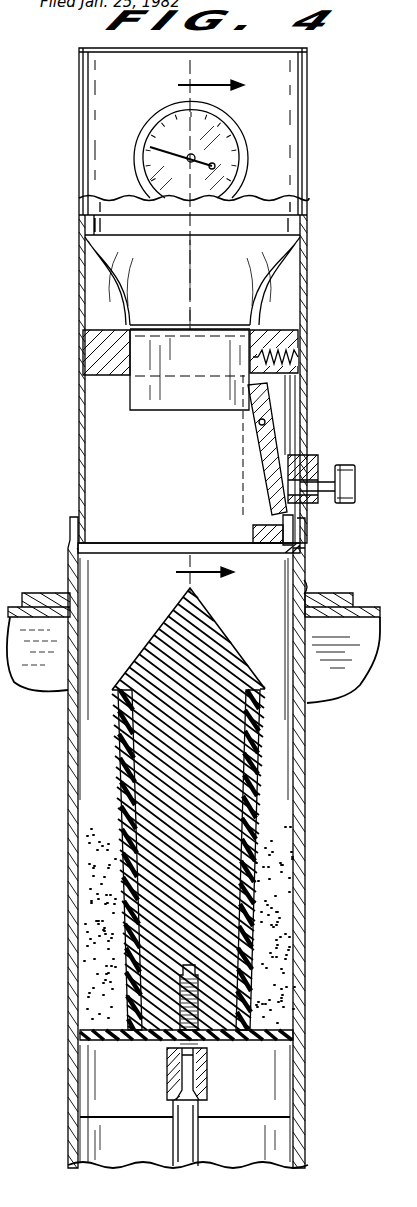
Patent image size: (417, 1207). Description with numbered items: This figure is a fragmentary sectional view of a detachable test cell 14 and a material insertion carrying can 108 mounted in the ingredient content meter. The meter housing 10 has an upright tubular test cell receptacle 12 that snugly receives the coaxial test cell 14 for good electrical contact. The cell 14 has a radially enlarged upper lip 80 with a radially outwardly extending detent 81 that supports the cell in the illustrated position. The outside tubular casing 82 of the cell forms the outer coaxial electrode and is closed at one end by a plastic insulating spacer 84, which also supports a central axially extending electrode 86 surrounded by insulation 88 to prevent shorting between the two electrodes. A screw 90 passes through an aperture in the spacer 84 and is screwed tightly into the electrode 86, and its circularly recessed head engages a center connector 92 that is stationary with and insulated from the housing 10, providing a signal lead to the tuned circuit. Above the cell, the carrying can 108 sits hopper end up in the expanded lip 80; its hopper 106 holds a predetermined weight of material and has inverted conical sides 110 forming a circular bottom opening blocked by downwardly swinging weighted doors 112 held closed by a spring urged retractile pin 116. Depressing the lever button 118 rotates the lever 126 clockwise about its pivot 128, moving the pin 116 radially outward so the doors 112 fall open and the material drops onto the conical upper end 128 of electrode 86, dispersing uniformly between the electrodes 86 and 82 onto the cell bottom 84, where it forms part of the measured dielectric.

The housing 10 is at (36, 647).
The test cell receptacle 12 is at (72, 598).
The test cell 14 is at (242, 1090).
The upper lip 80 is at (70, 531).
The detent 81 is at (305, 593).
The tubular casing 82 is at (76, 850).
The insulating spacer 84 is at (113, 1043).
The central electrode 86 is at (158, 669).
The insulation 88 is at (255, 751).
The screw 90 is at (170, 1069).
The center connector 92 is at (180, 1143).
The hopper 106 is at (292, 206).
The carrying can 108 is at (320, 259).
The inverted conical sides 110 is at (270, 294).
The weighted doors 112 is at (165, 412).
The retractile pin 116 is at (253, 357).
The lever button 118 is at (356, 501).
The lever 126 is at (272, 497).
The pivot 128 is at (260, 424).